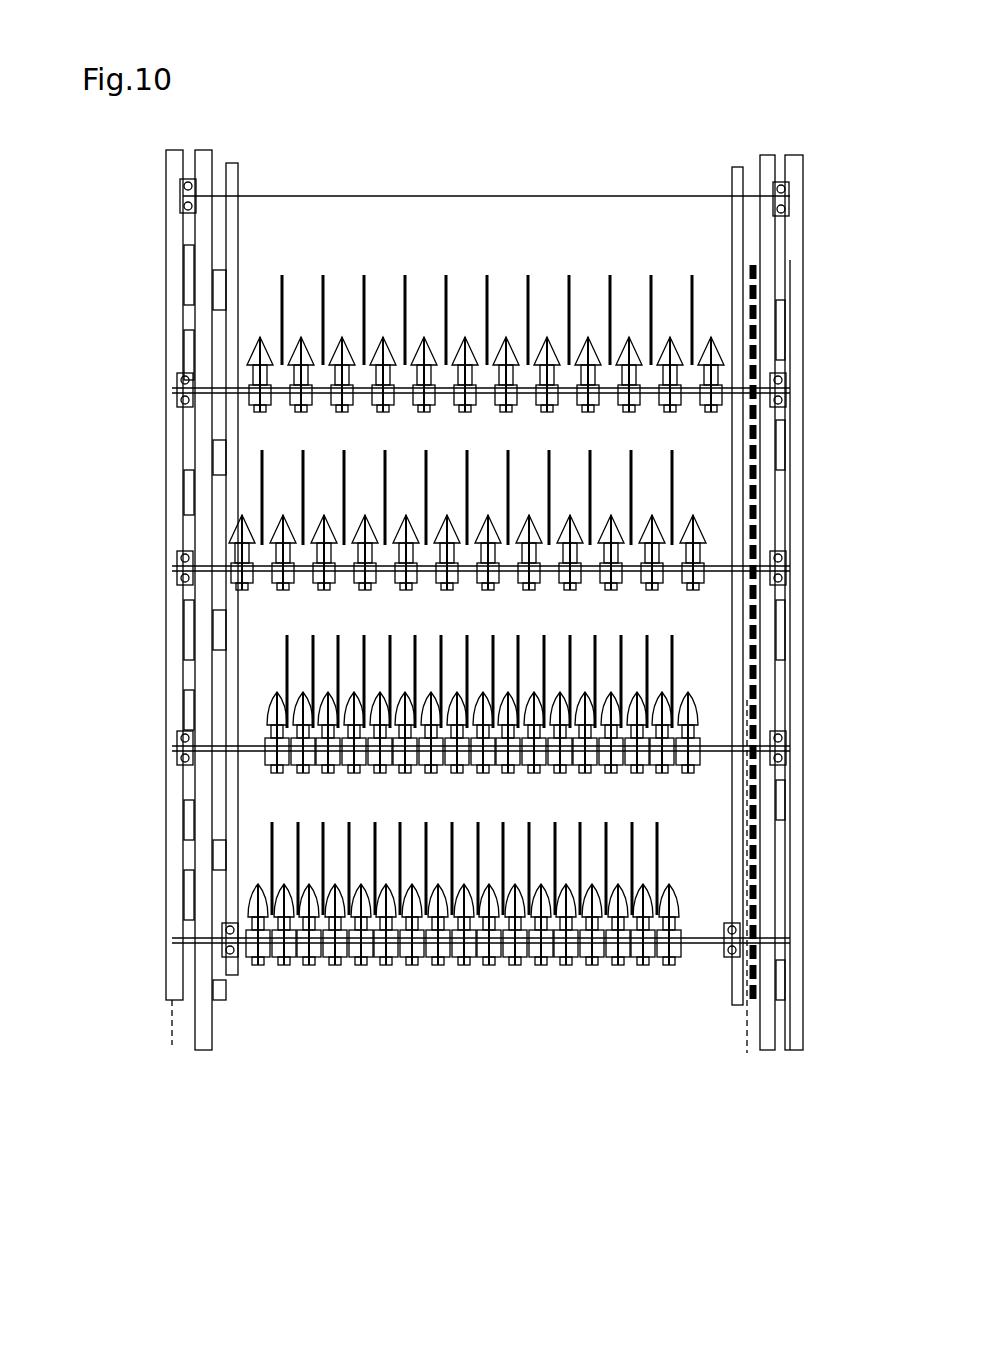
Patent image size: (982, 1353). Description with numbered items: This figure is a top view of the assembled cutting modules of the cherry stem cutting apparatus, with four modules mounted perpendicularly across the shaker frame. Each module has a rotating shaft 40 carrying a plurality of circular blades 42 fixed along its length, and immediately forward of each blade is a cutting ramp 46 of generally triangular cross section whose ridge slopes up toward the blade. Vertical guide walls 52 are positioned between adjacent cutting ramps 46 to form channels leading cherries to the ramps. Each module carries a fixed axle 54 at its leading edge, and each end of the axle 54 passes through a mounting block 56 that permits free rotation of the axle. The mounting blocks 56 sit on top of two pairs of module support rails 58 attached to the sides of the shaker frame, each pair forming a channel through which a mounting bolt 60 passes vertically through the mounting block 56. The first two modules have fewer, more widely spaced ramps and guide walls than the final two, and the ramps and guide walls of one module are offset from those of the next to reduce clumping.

The rotating shaft 40 is at (176, 940).
The circular blade 42 is at (181, 737).
The cutting ramp 46 is at (273, 702).
The vertical guide wall 52 is at (268, 841).
The fixed axle 54 is at (212, 197).
The mounting block 56 is at (210, 192).
The module support rail 58 is at (162, 1045).
The mounting bolt 60 is at (190, 185).